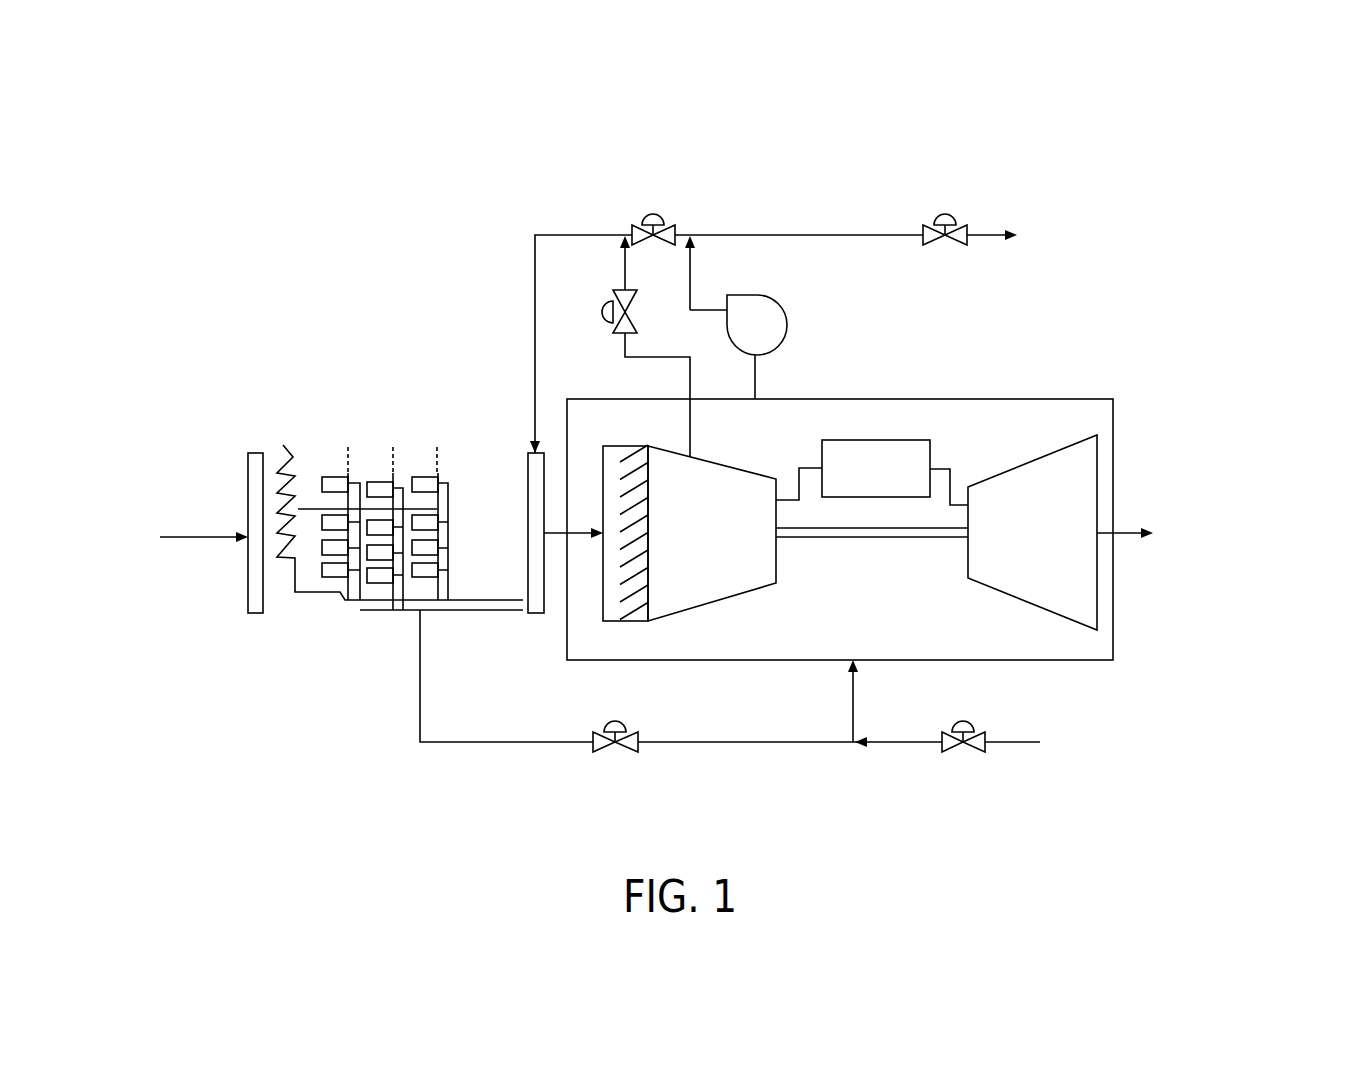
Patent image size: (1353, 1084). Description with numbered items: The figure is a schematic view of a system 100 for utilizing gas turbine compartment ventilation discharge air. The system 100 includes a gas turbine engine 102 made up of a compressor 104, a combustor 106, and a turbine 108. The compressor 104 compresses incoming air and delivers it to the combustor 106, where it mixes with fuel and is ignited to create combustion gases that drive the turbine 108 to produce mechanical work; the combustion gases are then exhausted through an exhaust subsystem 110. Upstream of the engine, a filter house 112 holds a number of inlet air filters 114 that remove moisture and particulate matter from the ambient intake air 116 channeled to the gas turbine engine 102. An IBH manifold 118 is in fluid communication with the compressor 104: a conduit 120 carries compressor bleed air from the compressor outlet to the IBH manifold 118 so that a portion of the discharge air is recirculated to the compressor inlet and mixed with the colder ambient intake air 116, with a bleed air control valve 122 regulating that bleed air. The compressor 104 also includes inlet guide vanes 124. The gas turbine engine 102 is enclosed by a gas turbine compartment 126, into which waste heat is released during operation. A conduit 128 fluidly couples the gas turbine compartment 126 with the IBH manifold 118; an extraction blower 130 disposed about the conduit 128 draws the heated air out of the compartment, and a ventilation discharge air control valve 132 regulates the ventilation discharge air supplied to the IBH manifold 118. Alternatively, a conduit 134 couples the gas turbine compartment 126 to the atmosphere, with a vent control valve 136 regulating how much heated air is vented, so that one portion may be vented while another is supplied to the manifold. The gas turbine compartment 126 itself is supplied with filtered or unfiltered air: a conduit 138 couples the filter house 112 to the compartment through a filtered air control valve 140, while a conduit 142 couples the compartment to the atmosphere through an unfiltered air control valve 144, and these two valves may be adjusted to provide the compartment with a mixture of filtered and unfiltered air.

The system 100 is at (871, 132).
The gas turbine engine 102 is at (922, 431).
The compressor 104 is at (717, 603).
The combustor 106 is at (877, 440).
The turbine 108 is at (1030, 607).
The exhaust subsystem 110 is at (1120, 533).
The filter house 112 is at (283, 445).
The inlet air filters 114 is at (420, 477).
The ambient intake air 116 is at (210, 537).
The IBH manifold 118 is at (537, 620).
The conduit 120 is at (655, 360).
The bleed air control valve 122 is at (607, 300).
The inlet guide vanes 124 is at (622, 621).
The gas turbine compartment 126 is at (960, 399).
The conduit 128 is at (690, 275).
The extraction blower 130 is at (786, 330).
The ventilation discharge air control valve 132 is at (655, 210).
The conduit 134 is at (778, 235).
The vent control valve 136 is at (957, 213).
The conduit 138 is at (470, 742).
The filtered air control valve 140 is at (598, 748).
The conduit 142 is at (900, 742).
The unfiltered air control valve 144 is at (942, 752).